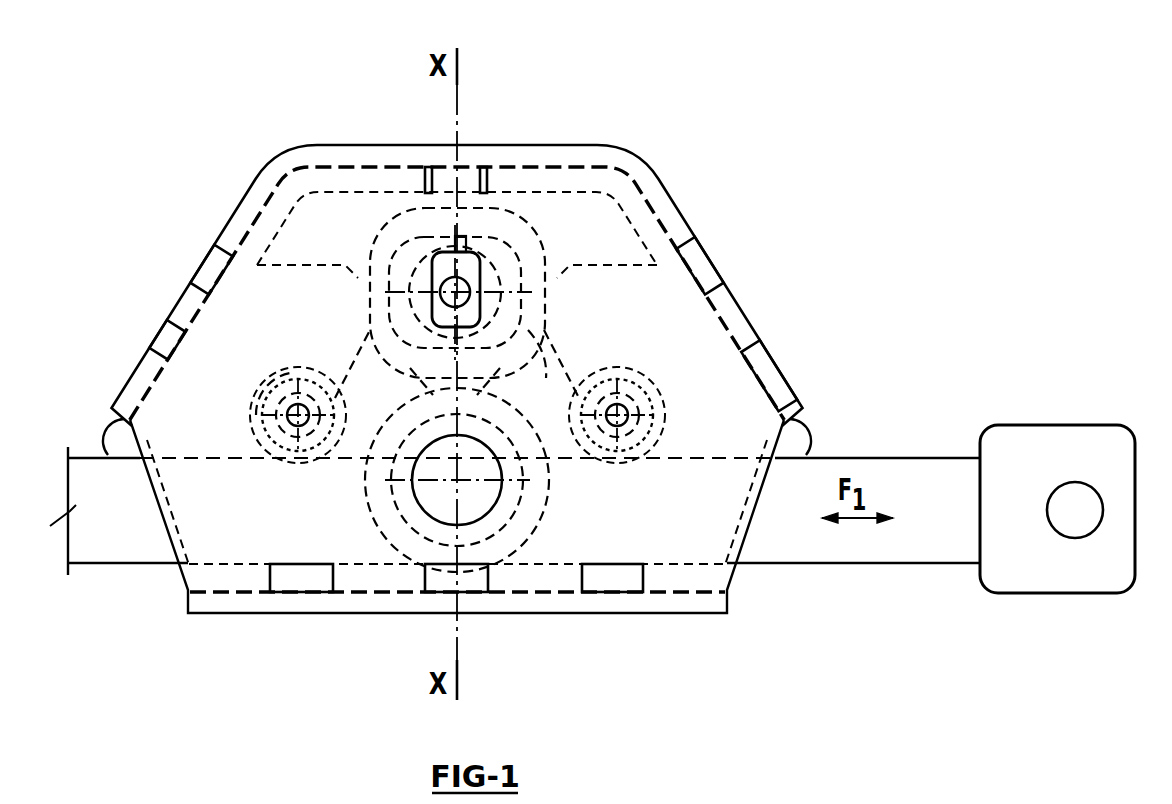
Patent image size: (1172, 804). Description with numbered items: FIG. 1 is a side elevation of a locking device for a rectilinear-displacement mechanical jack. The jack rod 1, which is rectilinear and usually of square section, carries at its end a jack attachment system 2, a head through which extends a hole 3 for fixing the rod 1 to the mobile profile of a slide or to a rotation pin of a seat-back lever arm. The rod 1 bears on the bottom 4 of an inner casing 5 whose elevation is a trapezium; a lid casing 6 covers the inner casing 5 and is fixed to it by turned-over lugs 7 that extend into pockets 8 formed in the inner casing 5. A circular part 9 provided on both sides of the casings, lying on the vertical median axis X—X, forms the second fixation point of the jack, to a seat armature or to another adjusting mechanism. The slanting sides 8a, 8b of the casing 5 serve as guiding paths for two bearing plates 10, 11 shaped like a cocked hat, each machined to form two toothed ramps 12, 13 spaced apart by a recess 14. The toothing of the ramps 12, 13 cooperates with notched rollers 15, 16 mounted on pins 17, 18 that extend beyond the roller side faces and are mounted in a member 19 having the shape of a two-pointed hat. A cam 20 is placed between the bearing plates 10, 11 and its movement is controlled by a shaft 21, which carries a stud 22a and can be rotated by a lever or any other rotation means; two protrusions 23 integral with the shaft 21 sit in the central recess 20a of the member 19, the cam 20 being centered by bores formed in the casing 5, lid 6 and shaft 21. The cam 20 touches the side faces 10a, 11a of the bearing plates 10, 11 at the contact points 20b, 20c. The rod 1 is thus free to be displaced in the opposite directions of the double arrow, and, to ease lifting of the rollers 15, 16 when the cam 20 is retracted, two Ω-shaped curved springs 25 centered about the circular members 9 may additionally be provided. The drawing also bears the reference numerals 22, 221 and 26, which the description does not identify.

The jack rod 1 is at (937, 465).
The jack attachment system 2 is at (1058, 442).
The hole 3 is at (1080, 525).
The bottom 4 is at (613, 563).
The inner casing 5 is at (678, 275).
The lid casing 6 is at (750, 342).
The turned over lugs 7 is at (750, 384).
The pockets 8 is at (677, 248).
The slanting side 8a is at (250, 335).
The slanting side 8b is at (700, 332).
The circular part 9 is at (425, 522).
The bearing plate 10 is at (267, 263).
The side face 10a is at (365, 305).
The bearing plate 11 is at (655, 258).
The side face 11a is at (560, 298).
The toothed ramp 12 is at (210, 420).
The toothed ramp 13 is at (350, 378).
The recess 14 is at (283, 372).
The notched roller 15 is at (248, 450).
The notched roller 16 is at (643, 437).
The pin 17 is at (300, 427).
The pin 18 is at (617, 430).
The two-pointed hat-shaped member 19 is at (367, 247).
The cam 20 is at (468, 245).
The central recess 20a is at (410, 243).
The point of contact 20b is at (423, 305).
The point of contact 20c is at (540, 313).
The shaft 21 is at (457, 277).
The partition wall 22 is at (399, 382).
The stud 22a is at (477, 308).
The keyway 221 is at (442, 252).
The protrusions 23 is at (507, 243).
The curved springs 25 is at (496, 537).
The bearing 26 is at (262, 392).